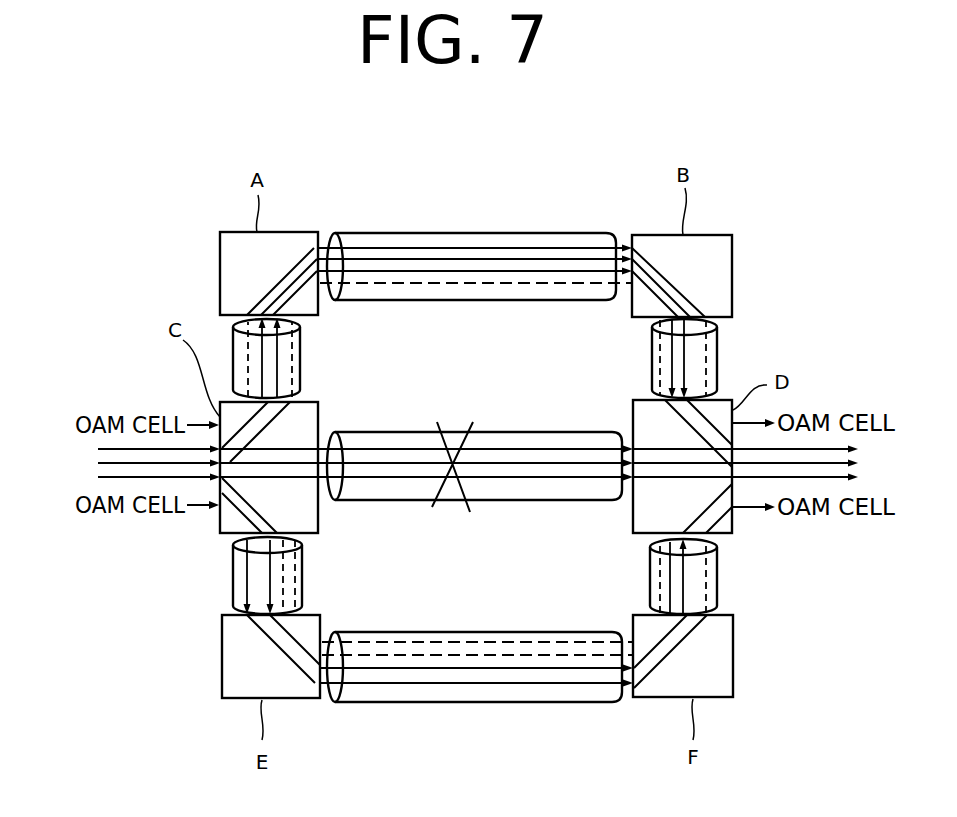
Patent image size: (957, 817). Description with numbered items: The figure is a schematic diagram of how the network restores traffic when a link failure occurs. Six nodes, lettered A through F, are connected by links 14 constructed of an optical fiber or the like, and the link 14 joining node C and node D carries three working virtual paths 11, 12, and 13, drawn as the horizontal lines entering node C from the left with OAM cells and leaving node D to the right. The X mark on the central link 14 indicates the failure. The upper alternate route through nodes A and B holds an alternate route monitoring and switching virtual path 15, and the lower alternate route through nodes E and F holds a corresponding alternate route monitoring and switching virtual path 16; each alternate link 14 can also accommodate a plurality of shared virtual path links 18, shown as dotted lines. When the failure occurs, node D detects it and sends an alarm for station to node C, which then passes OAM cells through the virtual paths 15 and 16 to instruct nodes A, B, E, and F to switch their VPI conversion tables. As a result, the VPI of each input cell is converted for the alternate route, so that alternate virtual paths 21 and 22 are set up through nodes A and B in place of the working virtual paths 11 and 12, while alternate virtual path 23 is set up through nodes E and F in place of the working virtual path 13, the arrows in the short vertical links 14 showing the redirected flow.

The working virtual path 11 is at (100, 448).
The working virtual path 12 is at (98, 463).
The working virtual path 13 is at (98, 478).
The link 14 is at (513, 233).
The alternate route monitoring and switching virtual path 15 is at (433, 233).
The alternate route monitoring and switching virtual path 16 is at (388, 687).
The shared virtual path link 18 is at (551, 284).
The alternate virtual path 21 is at (409, 259).
The alternate virtual path 22 is at (468, 271).
The alternate virtual path 23 is at (397, 665).